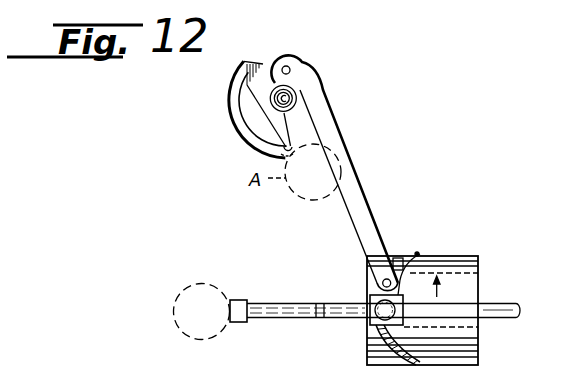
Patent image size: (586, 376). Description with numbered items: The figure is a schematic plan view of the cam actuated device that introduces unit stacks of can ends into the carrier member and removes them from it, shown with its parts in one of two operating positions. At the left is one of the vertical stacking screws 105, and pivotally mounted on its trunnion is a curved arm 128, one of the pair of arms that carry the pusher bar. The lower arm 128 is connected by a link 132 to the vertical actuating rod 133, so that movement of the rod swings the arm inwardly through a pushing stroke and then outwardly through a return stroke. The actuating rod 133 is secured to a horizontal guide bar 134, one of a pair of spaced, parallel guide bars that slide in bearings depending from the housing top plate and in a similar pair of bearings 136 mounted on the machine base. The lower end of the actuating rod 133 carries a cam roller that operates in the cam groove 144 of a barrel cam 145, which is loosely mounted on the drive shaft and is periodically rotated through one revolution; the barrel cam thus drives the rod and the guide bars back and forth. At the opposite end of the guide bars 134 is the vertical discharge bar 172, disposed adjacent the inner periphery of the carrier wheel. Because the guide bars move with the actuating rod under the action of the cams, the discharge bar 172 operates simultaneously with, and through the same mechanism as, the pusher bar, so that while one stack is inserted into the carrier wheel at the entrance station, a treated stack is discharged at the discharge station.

The stacking screw 105 is at (299, 97).
The curved arm 128 is at (230, 103).
The link 132 is at (351, 186).
The vertical actuating rod 133 is at (380, 312).
The guide bar 134 is at (495, 313).
The bearing 136 is at (456, 350).
The cam groove 144 is at (417, 254).
The barrel cam 145 is at (455, 272).
The discharge bar 172 is at (237, 305).